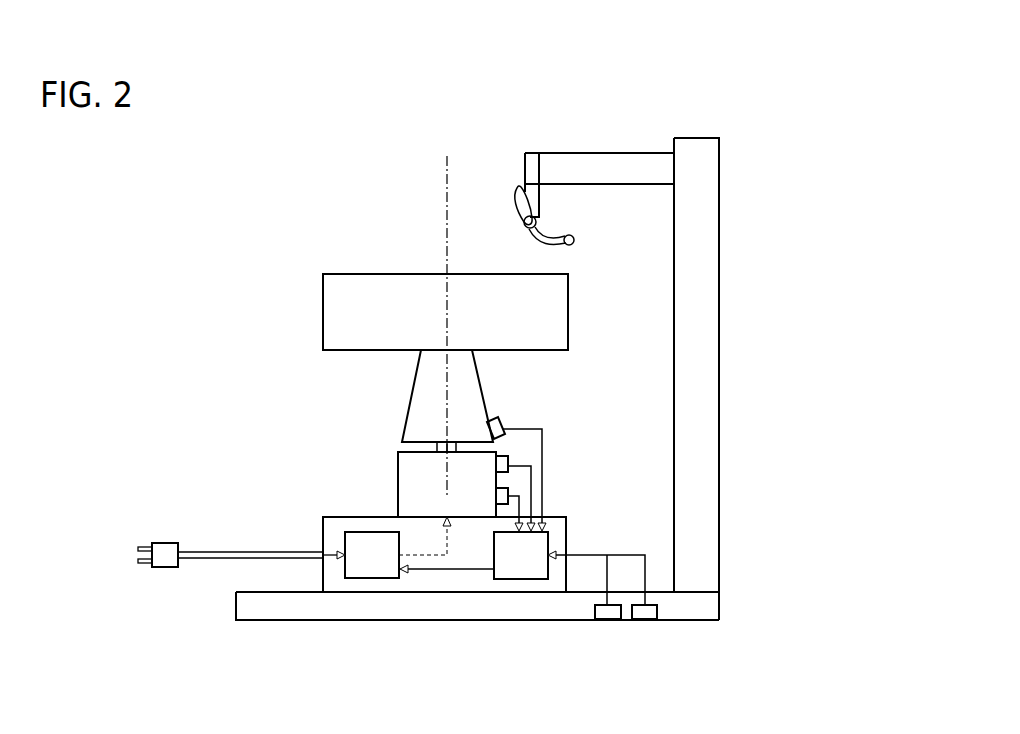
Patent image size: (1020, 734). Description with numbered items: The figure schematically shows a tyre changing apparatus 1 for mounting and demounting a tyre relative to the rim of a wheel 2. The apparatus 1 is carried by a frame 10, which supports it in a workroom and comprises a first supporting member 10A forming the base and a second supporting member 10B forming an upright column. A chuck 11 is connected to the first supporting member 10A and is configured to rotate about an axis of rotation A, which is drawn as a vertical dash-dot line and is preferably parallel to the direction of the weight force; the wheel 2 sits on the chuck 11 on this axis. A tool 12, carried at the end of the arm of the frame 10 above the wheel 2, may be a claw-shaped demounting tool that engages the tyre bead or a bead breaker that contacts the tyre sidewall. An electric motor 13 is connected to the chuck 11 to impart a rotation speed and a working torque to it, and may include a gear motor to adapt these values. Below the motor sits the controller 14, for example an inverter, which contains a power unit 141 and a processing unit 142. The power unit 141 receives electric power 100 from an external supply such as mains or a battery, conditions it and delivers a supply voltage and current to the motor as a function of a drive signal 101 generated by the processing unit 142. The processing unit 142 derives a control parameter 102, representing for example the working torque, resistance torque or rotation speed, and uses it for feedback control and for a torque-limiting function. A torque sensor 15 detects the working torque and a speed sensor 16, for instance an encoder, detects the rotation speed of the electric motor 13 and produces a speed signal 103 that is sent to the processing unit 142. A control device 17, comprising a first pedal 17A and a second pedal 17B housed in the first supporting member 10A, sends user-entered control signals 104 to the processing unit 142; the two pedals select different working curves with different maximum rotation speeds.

The tyre changing apparatus 1 is at (760, 211).
The wheel 2 is at (352, 318).
The frame 10 is at (695, 316).
The first supporting member 10A is at (272, 612).
The second supporting member 10B is at (707, 376).
The chuck 11 is at (430, 390).
The tool 12 is at (575, 240).
The electric motor 13 is at (408, 472).
The controller 14 is at (330, 527).
The torque sensor 15 is at (507, 487).
The speed sensor 16 is at (500, 420).
The control device 17 is at (638, 622).
The first pedal 17A is at (607, 612).
The second pedal 17B is at (645, 612).
The electric power 100 is at (335, 553).
The drive signal 101 is at (450, 570).
The control parameter 102 is at (521, 500).
The speed signal 103 is at (545, 432).
The control signals 104 is at (645, 568).
The power unit 141 is at (375, 565).
The processing unit 142 is at (522, 562).
The axis of rotation A is at (446, 177).